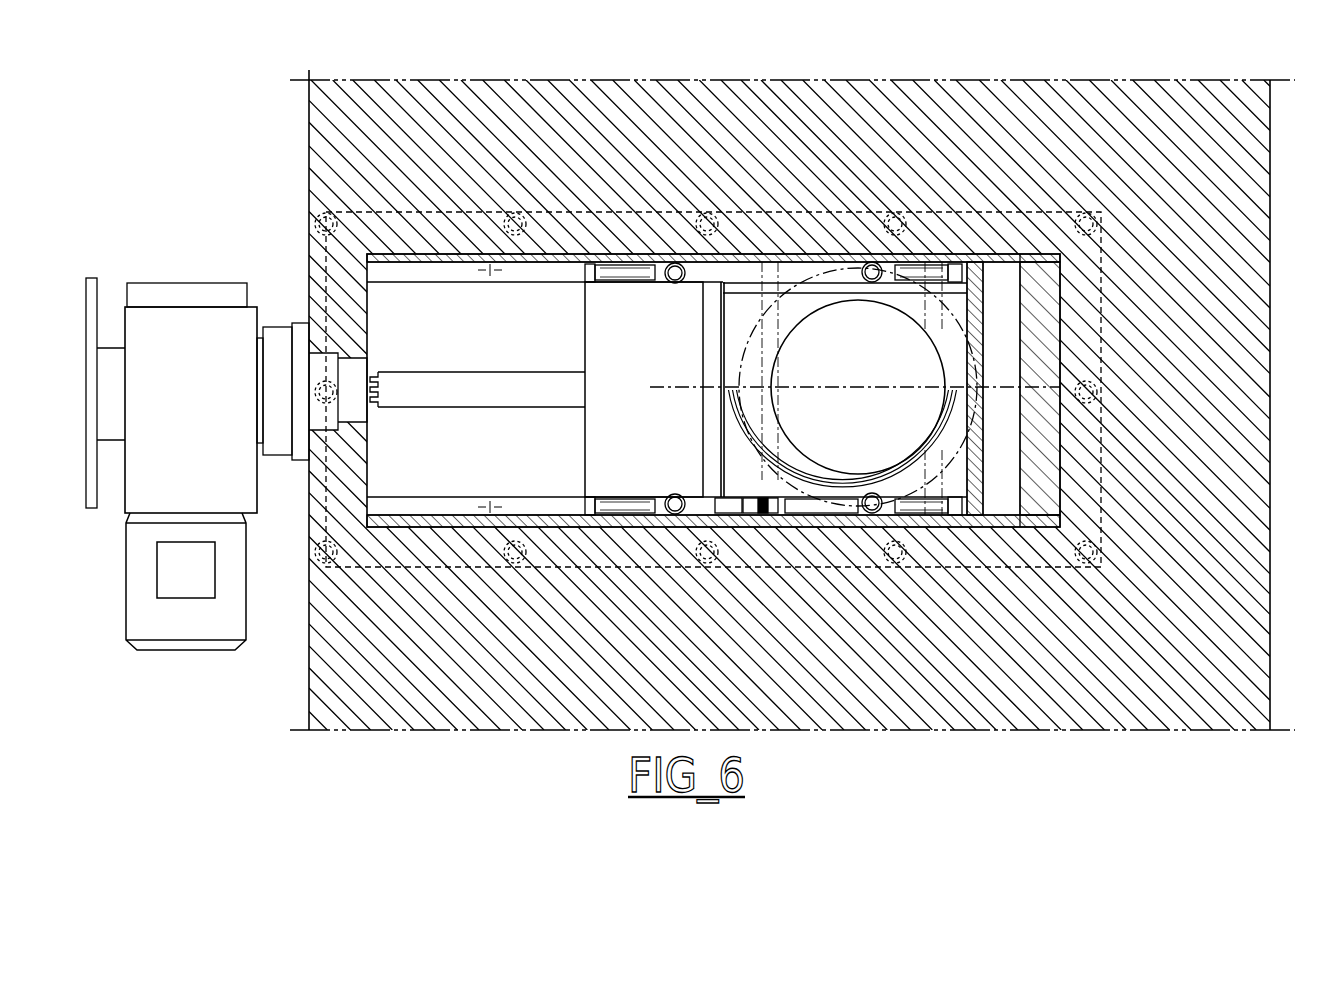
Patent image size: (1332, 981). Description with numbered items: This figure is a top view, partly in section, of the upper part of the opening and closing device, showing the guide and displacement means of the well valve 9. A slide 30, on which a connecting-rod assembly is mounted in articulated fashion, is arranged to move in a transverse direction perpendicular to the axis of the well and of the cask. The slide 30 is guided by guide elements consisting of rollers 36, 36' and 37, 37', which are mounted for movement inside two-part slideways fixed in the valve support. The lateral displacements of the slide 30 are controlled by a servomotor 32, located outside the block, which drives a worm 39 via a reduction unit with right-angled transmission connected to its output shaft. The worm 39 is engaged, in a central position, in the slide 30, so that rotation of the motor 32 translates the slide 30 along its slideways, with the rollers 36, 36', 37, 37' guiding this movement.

The well valve 9 is at (1284, 278).
The slide 30 is at (654, 389).
The servomotor 32 is at (207, 583).
The roller 36 is at (622, 633).
The roller 36' is at (654, 297).
The roller 37 is at (933, 635).
The roller 37' is at (949, 156).
The worm 39 is at (476, 388).